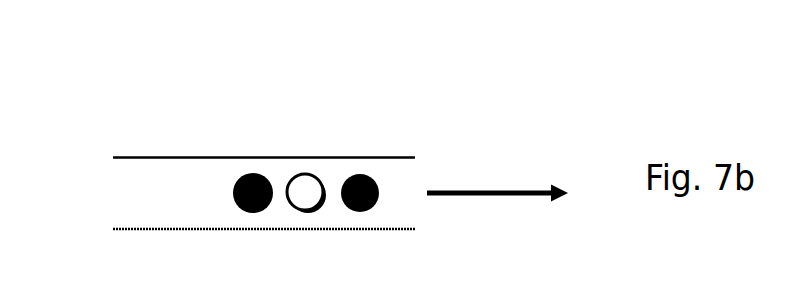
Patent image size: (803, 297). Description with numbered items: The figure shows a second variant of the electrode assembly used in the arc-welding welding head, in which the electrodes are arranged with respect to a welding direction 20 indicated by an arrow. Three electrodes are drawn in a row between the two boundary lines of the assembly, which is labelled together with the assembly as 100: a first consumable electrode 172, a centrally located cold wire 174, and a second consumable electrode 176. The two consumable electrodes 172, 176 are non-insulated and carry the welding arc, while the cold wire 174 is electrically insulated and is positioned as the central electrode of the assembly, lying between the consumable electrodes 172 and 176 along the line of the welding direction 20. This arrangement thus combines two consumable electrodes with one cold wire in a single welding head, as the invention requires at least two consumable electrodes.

The fluid channel 100 is at (212, 127).
The consumable electrode 172 is at (261, 192).
The cold wire 174 is at (297, 180).
The consumable electrode 176 is at (345, 178).
The welding direction 20 is at (488, 188).